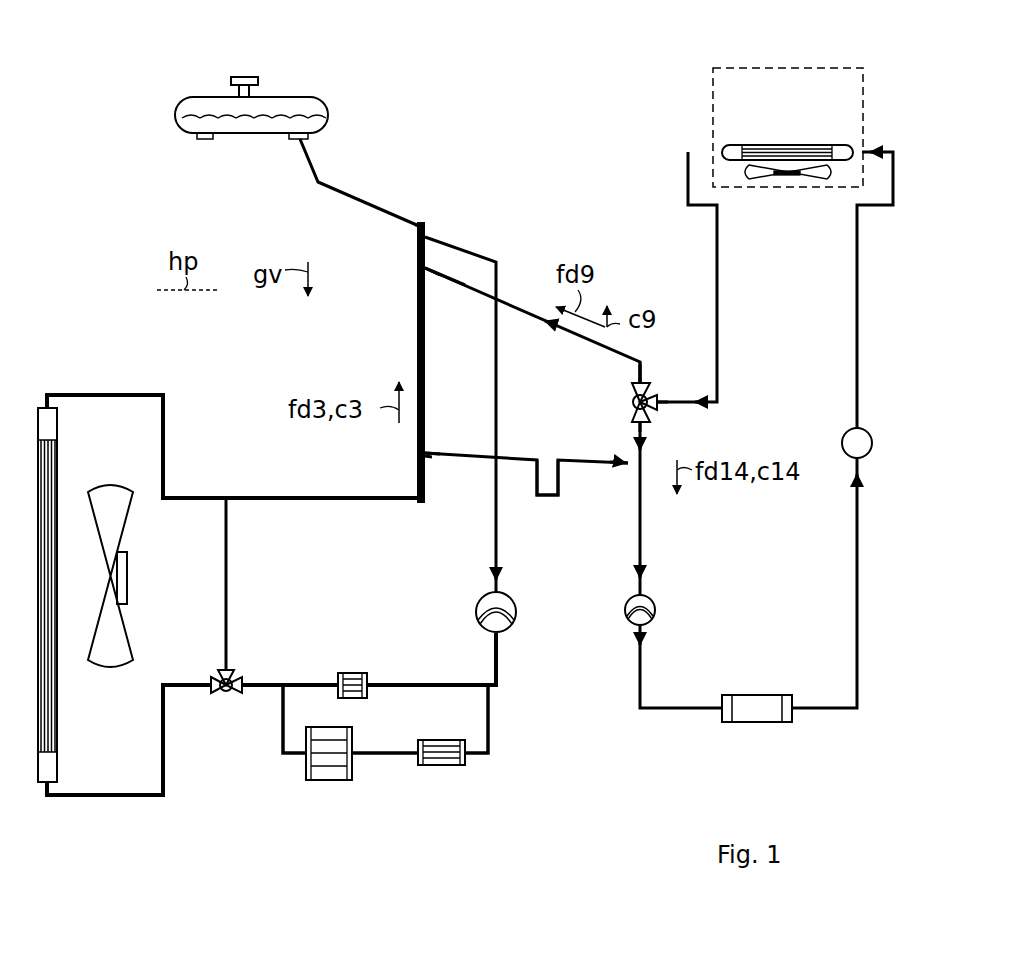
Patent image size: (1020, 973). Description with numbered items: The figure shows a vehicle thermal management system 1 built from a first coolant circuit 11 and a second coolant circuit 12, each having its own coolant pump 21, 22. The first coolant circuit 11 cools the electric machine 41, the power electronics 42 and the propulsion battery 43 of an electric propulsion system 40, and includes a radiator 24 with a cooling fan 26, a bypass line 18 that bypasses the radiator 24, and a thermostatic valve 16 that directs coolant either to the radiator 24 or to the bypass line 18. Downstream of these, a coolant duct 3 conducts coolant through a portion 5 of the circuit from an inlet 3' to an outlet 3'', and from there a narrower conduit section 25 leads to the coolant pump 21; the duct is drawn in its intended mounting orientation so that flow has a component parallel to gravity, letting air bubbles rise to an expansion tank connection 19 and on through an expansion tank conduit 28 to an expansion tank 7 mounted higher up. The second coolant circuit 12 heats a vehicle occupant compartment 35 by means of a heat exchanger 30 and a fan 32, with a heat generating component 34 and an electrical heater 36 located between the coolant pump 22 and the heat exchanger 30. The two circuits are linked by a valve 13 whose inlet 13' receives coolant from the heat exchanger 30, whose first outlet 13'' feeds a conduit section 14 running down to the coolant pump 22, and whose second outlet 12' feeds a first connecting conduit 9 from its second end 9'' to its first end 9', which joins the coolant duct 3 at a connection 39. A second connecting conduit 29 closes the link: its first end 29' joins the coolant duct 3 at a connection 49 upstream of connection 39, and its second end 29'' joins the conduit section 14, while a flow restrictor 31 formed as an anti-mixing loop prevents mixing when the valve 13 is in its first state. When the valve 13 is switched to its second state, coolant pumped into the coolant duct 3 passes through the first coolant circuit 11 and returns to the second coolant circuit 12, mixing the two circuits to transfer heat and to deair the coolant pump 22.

The vehicle thermal management system 1 is at (802, 28).
The coolant duct 3 is at (393, 363).
The inlet of the coolant duct 3' is at (401, 481).
The outlet of the coolant duct 3'' is at (434, 207).
The portion of the first coolant circuit 5 is at (345, 350).
The expansion tank 7 is at (176, 110).
The first connecting conduit 9 is at (532, 325).
The first end of the first connecting conduit 9' is at (439, 294).
The second end of the first connecting conduit 9'' is at (612, 372).
The first coolant circuit 11 is at (303, 500).
The second coolant circuit 12 is at (791, 430).
The connection / second outlet of the valve 12' is at (672, 367).
The valve 13 is at (613, 402).
The inlet of the valve 13' is at (688, 422).
The first outlet of the valve 13'' is at (604, 439).
The conduit section 14 is at (643, 532).
The thermostatic valve 16 is at (226, 694).
The bypass line 18 is at (227, 590).
The expansion tank connection 19 is at (417, 226).
The coolant pump of the first coolant circuit 21 is at (476, 612).
The coolant pump of the second coolant circuit 22 is at (646, 616).
The radiator 24 is at (58, 424).
The conduit section 25 is at (497, 258).
The cooling fan 26 is at (115, 535).
The expansion tank conduit 28 is at (368, 196).
The second connecting conduit 29 is at (526, 455).
The first end of the second connecting conduit 29' is at (455, 474).
The second end of the second connecting conduit 29'' is at (609, 489).
The heat exchanger 30 is at (838, 150).
The flow restrictor 31 is at (548, 497).
The fan 32 is at (818, 176).
The heat generating component 34 is at (764, 715).
The vehicle occupant compartment 35 is at (788, 127).
The electrical heater 36 is at (873, 445).
The connection of the first connecting conduit at the coolant duct 39 is at (428, 268).
The electric propulsion system 40 is at (522, 722).
The electric machine 41 is at (356, 680).
The power electronics 42 is at (445, 766).
The propulsion battery 43 is at (328, 775).
The connection 49 is at (428, 458).